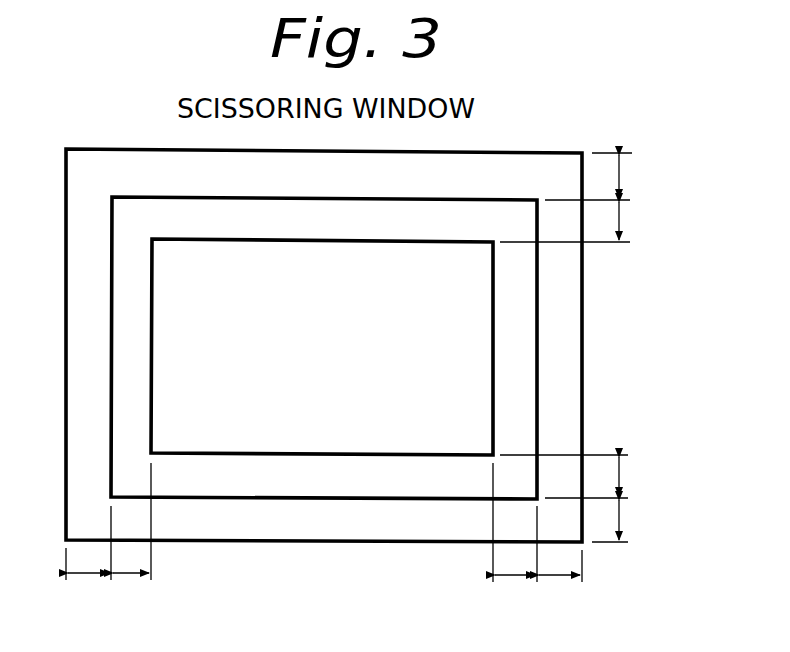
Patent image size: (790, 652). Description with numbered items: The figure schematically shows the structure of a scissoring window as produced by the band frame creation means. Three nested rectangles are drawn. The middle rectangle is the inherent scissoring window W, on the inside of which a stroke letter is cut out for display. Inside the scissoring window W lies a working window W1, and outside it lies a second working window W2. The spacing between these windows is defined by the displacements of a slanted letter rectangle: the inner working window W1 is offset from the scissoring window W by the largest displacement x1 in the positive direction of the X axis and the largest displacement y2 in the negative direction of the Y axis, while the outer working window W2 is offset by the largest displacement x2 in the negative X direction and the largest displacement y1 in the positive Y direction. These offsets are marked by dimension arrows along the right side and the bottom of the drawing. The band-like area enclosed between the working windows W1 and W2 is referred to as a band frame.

The working window W2 is at (583, 415).
The scissoring window W is at (537, 351).
The working window W1 is at (493, 279).
The largest displacement in the positive direction of Y axis y1 is at (598, 371).
The largest displacement in the negative direction of Y axis y2 is at (576, 325).
The largest displacement in the positive direction of X axis x1 is at (88, 577).
The largest displacement in the negative direction of X axis x2 is at (130, 577).